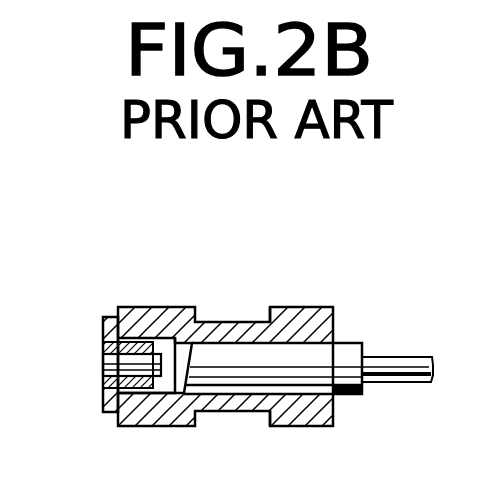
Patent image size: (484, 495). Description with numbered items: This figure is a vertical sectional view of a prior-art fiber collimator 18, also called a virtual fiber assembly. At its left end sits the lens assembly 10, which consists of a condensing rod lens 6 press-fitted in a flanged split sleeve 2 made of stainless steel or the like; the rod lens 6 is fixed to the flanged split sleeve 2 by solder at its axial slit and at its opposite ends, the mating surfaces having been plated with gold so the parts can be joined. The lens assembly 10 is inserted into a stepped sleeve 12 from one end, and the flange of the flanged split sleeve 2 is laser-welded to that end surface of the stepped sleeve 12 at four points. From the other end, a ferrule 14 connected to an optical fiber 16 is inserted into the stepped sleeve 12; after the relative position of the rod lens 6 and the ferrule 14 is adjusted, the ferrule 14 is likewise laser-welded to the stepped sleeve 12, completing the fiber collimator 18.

The lens assembly 10 is at (93, 334).
The fiber collimator 18 is at (219, 320).
The stepped sleeve 12 is at (300, 313).
The ferrule 14 is at (331, 397).
The optical fiber 16 is at (398, 367).
The flanged split sleeve 2 is at (98, 402).
The condensing rod lens 6 is at (102, 370).